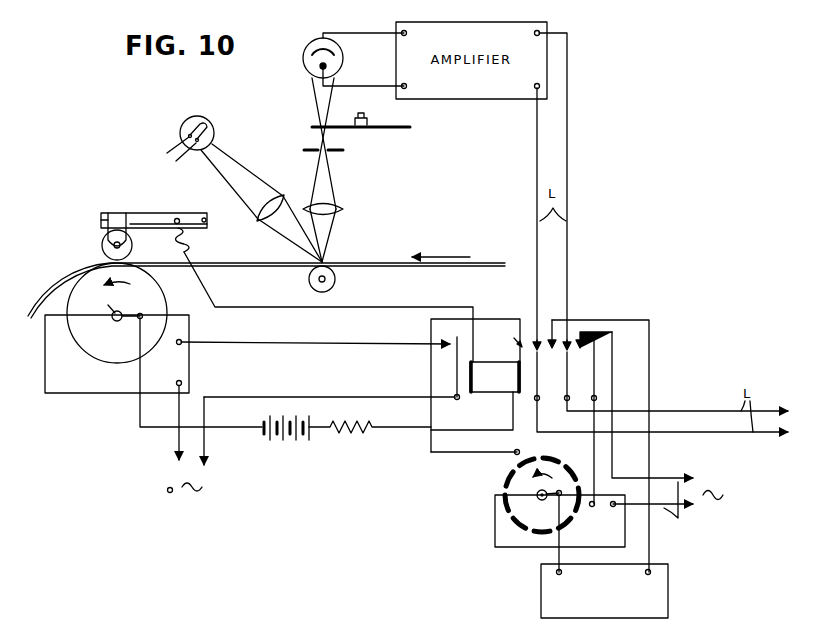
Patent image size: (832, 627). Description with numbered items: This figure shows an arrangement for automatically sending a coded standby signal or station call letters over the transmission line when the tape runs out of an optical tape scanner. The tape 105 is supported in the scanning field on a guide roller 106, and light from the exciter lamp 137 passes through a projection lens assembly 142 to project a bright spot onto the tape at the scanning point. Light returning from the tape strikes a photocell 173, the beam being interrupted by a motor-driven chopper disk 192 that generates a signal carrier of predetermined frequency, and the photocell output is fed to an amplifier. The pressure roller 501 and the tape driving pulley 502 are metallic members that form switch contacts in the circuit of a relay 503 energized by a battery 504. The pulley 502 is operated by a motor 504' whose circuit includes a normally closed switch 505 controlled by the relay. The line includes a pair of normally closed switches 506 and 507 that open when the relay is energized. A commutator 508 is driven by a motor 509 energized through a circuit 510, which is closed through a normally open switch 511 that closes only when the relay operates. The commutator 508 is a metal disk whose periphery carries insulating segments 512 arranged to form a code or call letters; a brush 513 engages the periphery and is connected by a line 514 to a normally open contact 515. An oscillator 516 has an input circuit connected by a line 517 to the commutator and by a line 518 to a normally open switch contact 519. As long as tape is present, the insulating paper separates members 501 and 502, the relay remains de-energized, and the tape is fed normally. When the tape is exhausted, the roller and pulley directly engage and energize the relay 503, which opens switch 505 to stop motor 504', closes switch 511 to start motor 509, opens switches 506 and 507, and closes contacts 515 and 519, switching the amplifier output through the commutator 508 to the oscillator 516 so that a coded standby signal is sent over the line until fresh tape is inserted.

The tape 105 is at (467, 262).
The guide roller 106 is at (308, 279).
The exciter lamp 137 is at (187, 120).
The projection lens assembly 142 is at (267, 200).
The photocell 173 is at (311, 42).
The chopper disk 192 is at (391, 130).
The pressure roller 501 is at (101, 244).
The tape driving pulley 502 is at (103, 355).
The relay 503 is at (503, 384).
The battery 504 is at (344, 444).
The motor 504' is at (117, 371).
The normally closed switch 505 is at (450, 366).
The normally closed switch 506 is at (534, 338).
The normally closed switch 507 is at (568, 340).
The commutator 508 is at (510, 497).
The motor 509 is at (500, 528).
The motor circuit 510 is at (654, 510).
The normally open switch 511 is at (583, 340).
The insulating segments 512 is at (537, 458).
The brush 513 is at (512, 456).
The line 514 is at (431, 441).
The normally open contact 515 is at (519, 346).
The oscillator 516 is at (669, 605).
The line 517 is at (557, 555).
The line 518 is at (651, 379).
The switch contact 519 is at (553, 340).